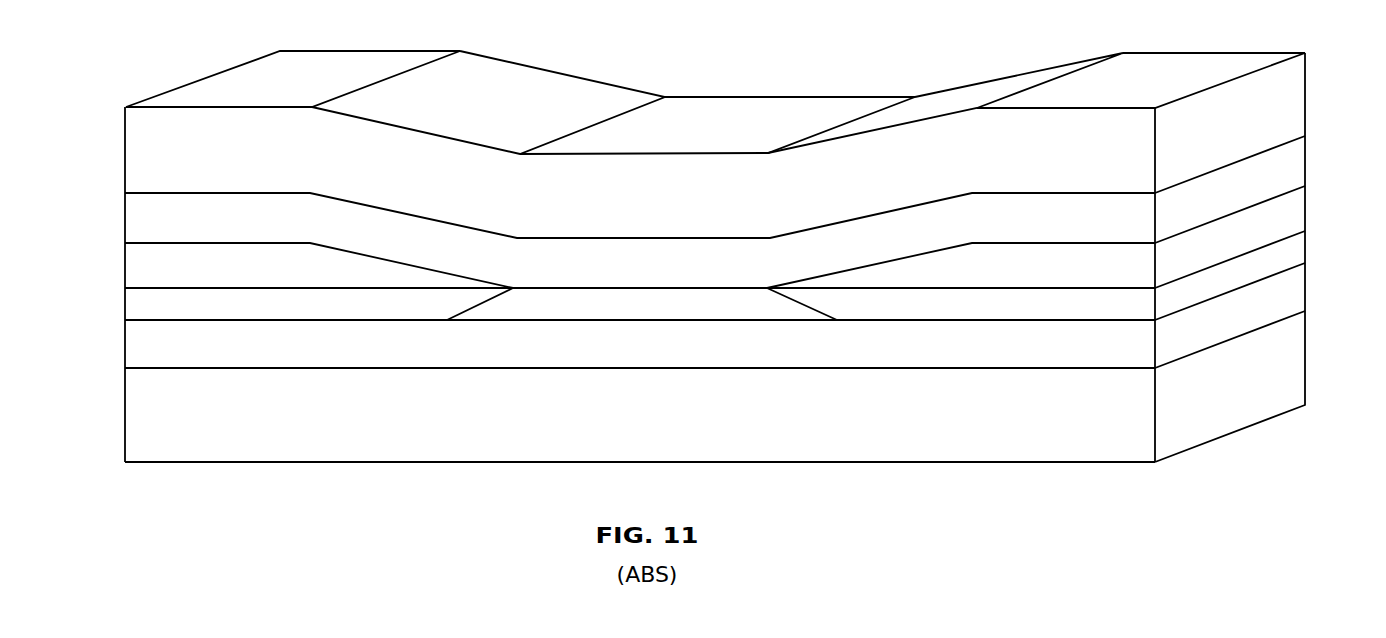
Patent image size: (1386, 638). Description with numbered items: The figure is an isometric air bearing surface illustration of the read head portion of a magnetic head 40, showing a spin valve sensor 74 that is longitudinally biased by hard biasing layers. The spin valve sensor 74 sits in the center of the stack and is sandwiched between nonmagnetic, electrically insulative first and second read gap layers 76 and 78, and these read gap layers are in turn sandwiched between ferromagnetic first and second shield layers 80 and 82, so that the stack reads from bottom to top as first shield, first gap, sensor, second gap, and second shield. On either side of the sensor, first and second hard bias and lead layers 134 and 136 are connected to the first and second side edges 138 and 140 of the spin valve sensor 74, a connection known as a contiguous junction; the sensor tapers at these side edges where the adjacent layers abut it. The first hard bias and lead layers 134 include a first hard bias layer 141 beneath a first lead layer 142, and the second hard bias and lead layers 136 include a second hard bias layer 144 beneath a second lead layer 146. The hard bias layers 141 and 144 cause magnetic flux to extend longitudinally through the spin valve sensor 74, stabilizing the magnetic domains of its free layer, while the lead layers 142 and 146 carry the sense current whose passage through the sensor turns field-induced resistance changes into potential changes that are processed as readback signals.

The piggyback magnetic head 40 is at (792, 70).
The spin valve sensor 74 is at (552, 282).
The first read gap layer 76 is at (823, 353).
The second read gap layer 78 is at (375, 223).
The first shield layer 80 is at (285, 448).
The second shield layer 82 is at (572, 87).
The first hard bias and lead layers 134 is at (246, 282).
The second hard bias and lead layers 136 is at (1108, 275).
The first side edge 138 is at (463, 309).
The second side edge 140 is at (817, 308).
The first hard bias layer 141 is at (169, 305).
The first lead layer 142 is at (168, 255).
The second hard bias layer 144 is at (1101, 308).
The second lead layer 146 is at (1102, 258).